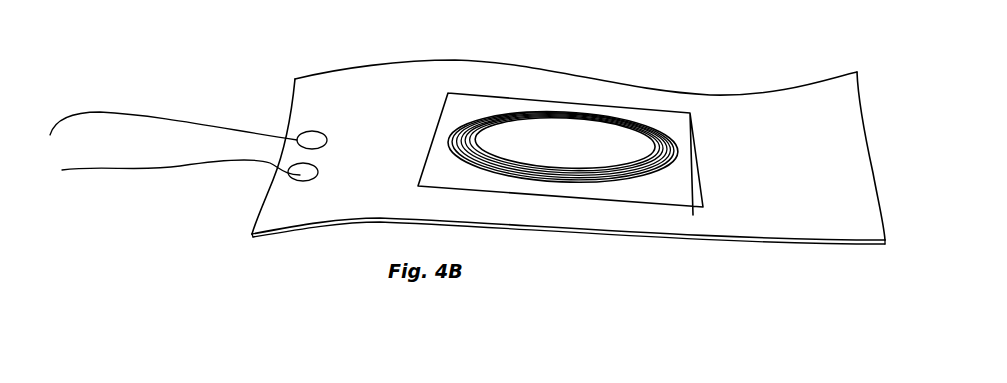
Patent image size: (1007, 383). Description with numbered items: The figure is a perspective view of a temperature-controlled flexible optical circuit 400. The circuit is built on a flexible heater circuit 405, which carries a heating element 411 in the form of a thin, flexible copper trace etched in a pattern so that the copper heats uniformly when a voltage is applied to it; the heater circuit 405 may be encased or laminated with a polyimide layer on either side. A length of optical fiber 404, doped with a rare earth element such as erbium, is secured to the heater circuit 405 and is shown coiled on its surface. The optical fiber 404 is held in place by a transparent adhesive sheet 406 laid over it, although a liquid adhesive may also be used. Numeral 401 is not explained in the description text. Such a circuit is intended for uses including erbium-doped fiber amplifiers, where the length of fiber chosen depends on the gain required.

The temperature-controlled flexible optical circuit 400 is at (887, 78).
The flexible substrate 401 is at (242, 210).
The optical fiber 404 is at (450, 140).
The flexible heater circuit 405 is at (288, 125).
The adhesive sheet 406 is at (470, 95).
The heating element 411 is at (757, 155).